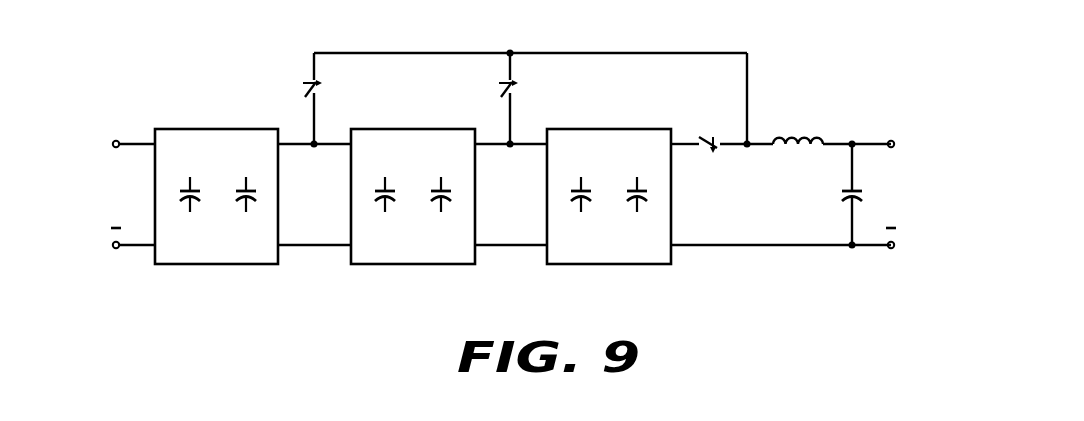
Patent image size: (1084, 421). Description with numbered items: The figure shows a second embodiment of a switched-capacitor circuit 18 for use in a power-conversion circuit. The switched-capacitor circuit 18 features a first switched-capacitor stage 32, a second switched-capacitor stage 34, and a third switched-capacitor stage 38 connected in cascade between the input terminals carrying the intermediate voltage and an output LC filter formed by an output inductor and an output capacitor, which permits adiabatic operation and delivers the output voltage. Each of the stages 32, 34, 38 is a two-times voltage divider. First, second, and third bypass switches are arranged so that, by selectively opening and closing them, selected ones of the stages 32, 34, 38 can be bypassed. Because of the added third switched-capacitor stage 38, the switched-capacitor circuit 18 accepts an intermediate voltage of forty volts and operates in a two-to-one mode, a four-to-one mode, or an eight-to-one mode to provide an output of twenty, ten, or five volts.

The switched-capacitor circuit 18 is at (828, 62).
The first switched-capacitor stage 32 is at (216, 227).
The second switched-capacitor stage 34 is at (413, 227).
The third switched-capacitor stage 38 is at (609, 227).